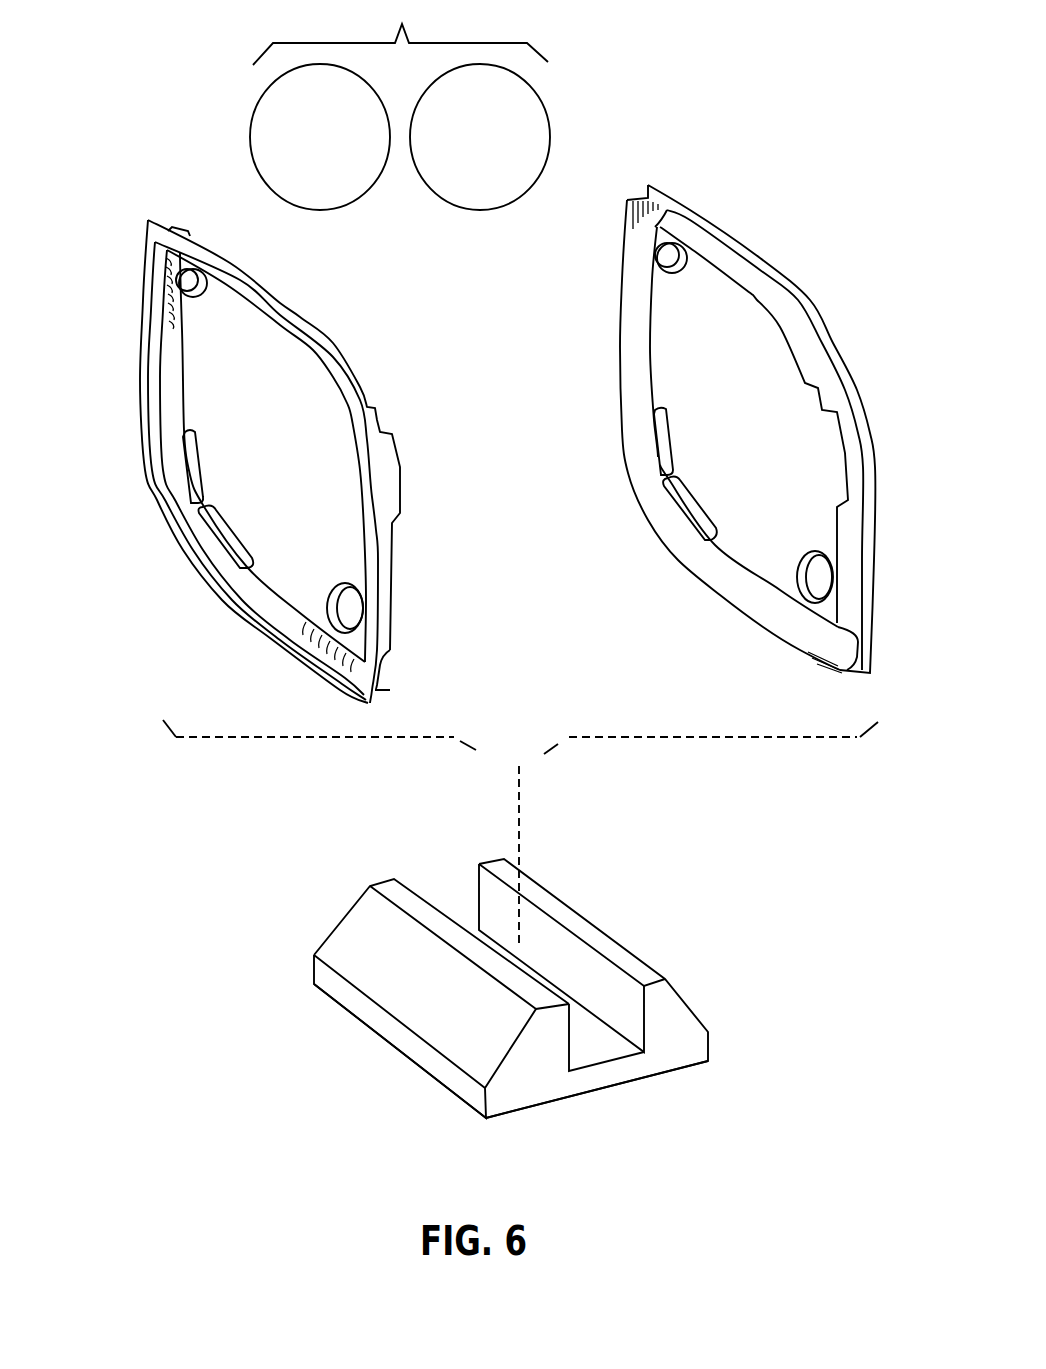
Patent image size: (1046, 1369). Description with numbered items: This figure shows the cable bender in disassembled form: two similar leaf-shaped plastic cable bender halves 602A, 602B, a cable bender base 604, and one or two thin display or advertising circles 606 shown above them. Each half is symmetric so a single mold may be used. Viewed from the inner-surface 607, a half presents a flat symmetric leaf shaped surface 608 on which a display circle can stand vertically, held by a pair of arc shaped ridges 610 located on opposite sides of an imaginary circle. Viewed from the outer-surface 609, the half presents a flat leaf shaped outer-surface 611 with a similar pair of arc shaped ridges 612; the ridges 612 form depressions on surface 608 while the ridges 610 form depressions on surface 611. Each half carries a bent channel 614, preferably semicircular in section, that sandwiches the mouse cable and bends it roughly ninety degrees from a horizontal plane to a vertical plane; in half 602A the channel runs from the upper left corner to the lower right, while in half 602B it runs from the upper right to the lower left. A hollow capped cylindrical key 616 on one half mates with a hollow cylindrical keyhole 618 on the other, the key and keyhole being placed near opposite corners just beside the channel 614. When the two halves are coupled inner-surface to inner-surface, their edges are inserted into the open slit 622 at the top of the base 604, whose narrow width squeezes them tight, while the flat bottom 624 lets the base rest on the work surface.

The cable bender half 602A is at (872, 667).
The cable bender half 602B is at (363, 700).
The cable bender base 604 is at (710, 1032).
The thin display or advertising circles 606 is at (400, 105).
The inner-surface 607 is at (576, 435).
The inner surface 608 is at (685, 380).
The outer-surface 609 is at (114, 438).
The arc shaped ridges 610 is at (193, 470).
The outer-surface 611 is at (297, 575).
The arc shaped ridges 612 is at (333, 345).
The bent channel 614 is at (378, 663).
The key 616 is at (195, 272).
The keyhole 618 is at (327, 607).
The slit 622 is at (599, 1064).
The bottom 624 is at (547, 1100).